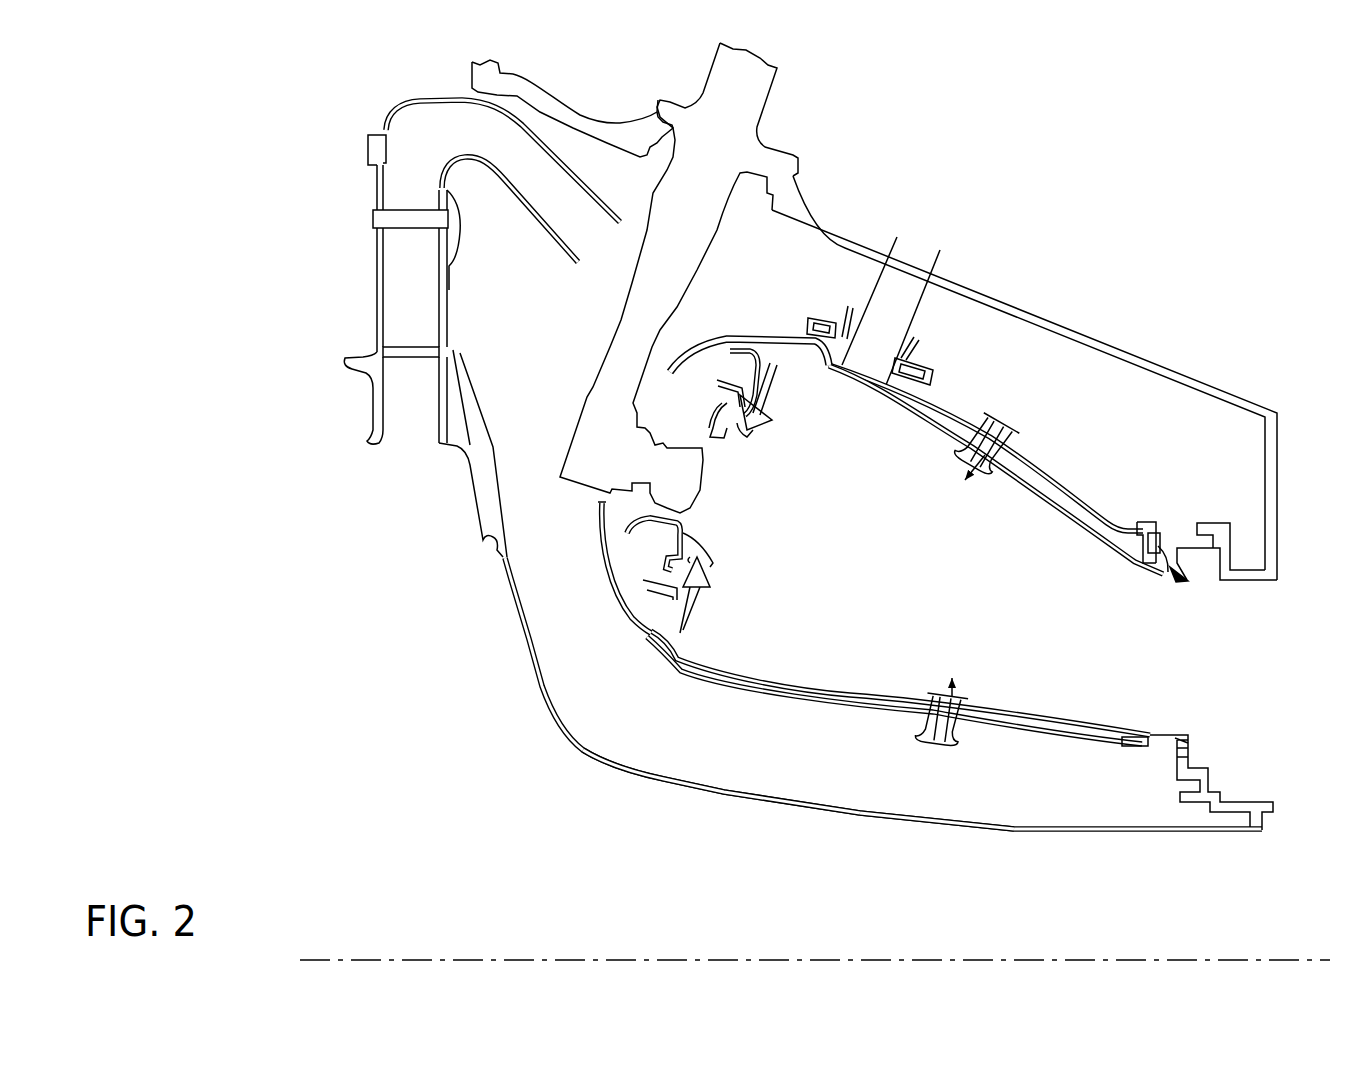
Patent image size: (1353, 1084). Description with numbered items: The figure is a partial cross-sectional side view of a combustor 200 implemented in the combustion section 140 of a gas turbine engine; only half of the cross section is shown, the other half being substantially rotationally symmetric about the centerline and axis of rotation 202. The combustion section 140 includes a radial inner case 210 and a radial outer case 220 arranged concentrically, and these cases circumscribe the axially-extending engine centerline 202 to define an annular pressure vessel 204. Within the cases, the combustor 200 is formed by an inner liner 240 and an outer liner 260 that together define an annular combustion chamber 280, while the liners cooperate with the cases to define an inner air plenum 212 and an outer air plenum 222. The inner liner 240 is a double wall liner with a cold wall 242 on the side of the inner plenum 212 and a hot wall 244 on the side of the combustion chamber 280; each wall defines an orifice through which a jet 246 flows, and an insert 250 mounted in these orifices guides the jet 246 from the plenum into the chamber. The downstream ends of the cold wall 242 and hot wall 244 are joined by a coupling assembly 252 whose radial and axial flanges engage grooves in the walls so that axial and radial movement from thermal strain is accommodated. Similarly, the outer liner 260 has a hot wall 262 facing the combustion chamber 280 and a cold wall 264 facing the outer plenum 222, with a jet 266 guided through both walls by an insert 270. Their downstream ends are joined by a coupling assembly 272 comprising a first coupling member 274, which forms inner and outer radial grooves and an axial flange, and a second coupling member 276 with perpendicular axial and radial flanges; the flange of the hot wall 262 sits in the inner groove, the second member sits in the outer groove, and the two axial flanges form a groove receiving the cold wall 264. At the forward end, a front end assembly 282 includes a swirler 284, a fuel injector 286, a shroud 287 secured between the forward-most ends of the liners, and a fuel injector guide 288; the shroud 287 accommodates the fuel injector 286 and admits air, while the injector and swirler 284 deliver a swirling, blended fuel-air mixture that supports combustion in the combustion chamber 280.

The combustion section 140 is at (287, 173).
The combustor 200 is at (1024, 379).
The centerline and axis of rotation 202 is at (360, 960).
The annular pressure vessel 204 is at (889, 708).
The radial inner case 210 is at (700, 797).
The inner air plenum 212 is at (833, 803).
The radial outer case 220 is at (955, 284).
The outer air plenum 222 is at (1084, 357).
The inner liner 240 is at (885, 710).
The cold wall 242 is at (800, 707).
The hot wall 244 is at (757, 670).
The jet 246 is at (947, 745).
The insert 250 is at (973, 697).
The coupling assembly 252 is at (1133, 750).
The outer liner 260 is at (998, 457).
The hot wall 262 is at (1057, 516).
The cold wall 264 is at (1067, 487).
The jet 266 is at (1010, 418).
The insert 270 is at (1022, 430).
The coupling assembly 272 is at (1175, 521).
The first coupling member 274 is at (1165, 550).
The second coupling member 276 is at (1150, 523).
The annular combustion chamber 280 is at (689, 486).
The front end assembly 282 is at (580, 365).
The swirler 284 is at (713, 558).
The fuel injector 286 is at (702, 493).
The shroud 287 is at (597, 523).
The fuel injector guide 288 is at (650, 520).